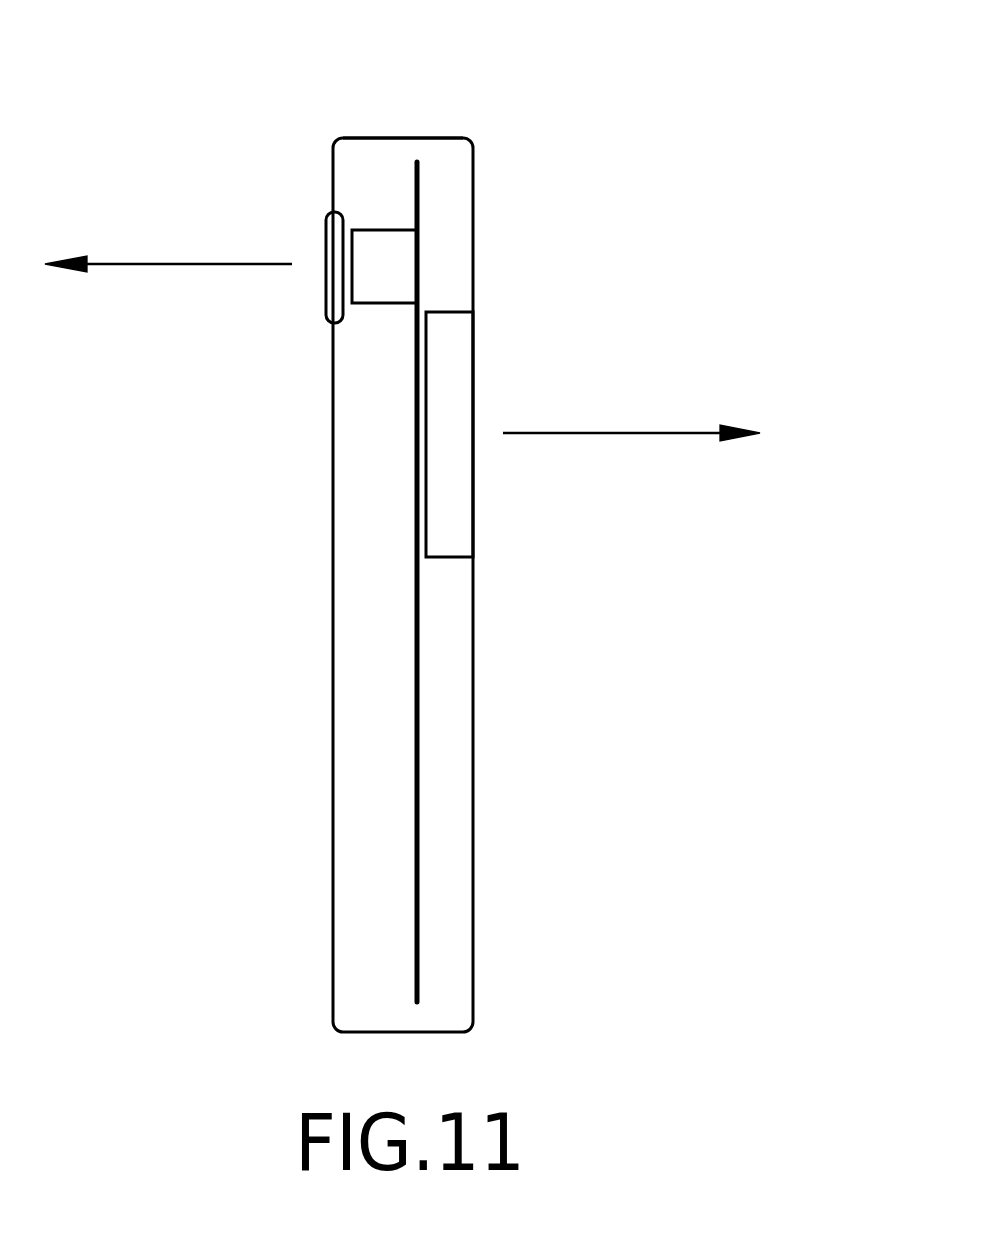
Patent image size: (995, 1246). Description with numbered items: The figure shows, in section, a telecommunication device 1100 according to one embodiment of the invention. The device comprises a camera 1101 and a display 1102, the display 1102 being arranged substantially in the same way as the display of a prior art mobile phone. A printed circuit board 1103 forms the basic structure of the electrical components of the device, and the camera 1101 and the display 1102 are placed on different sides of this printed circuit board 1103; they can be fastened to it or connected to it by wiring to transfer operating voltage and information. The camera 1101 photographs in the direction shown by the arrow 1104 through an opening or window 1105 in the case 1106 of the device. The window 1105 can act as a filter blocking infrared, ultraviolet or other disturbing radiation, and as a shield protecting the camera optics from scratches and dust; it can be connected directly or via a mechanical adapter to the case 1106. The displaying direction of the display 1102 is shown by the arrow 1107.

The telecommunication device 1100 is at (707, 663).
The camera 1101 is at (383, 283).
The display 1102 is at (473, 407).
The printed circuit board 1103 is at (418, 202).
The arrow 1104 is at (183, 263).
The window 1105 is at (325, 285).
The case 1106 is at (375, 138).
The arrow 1107 is at (607, 434).